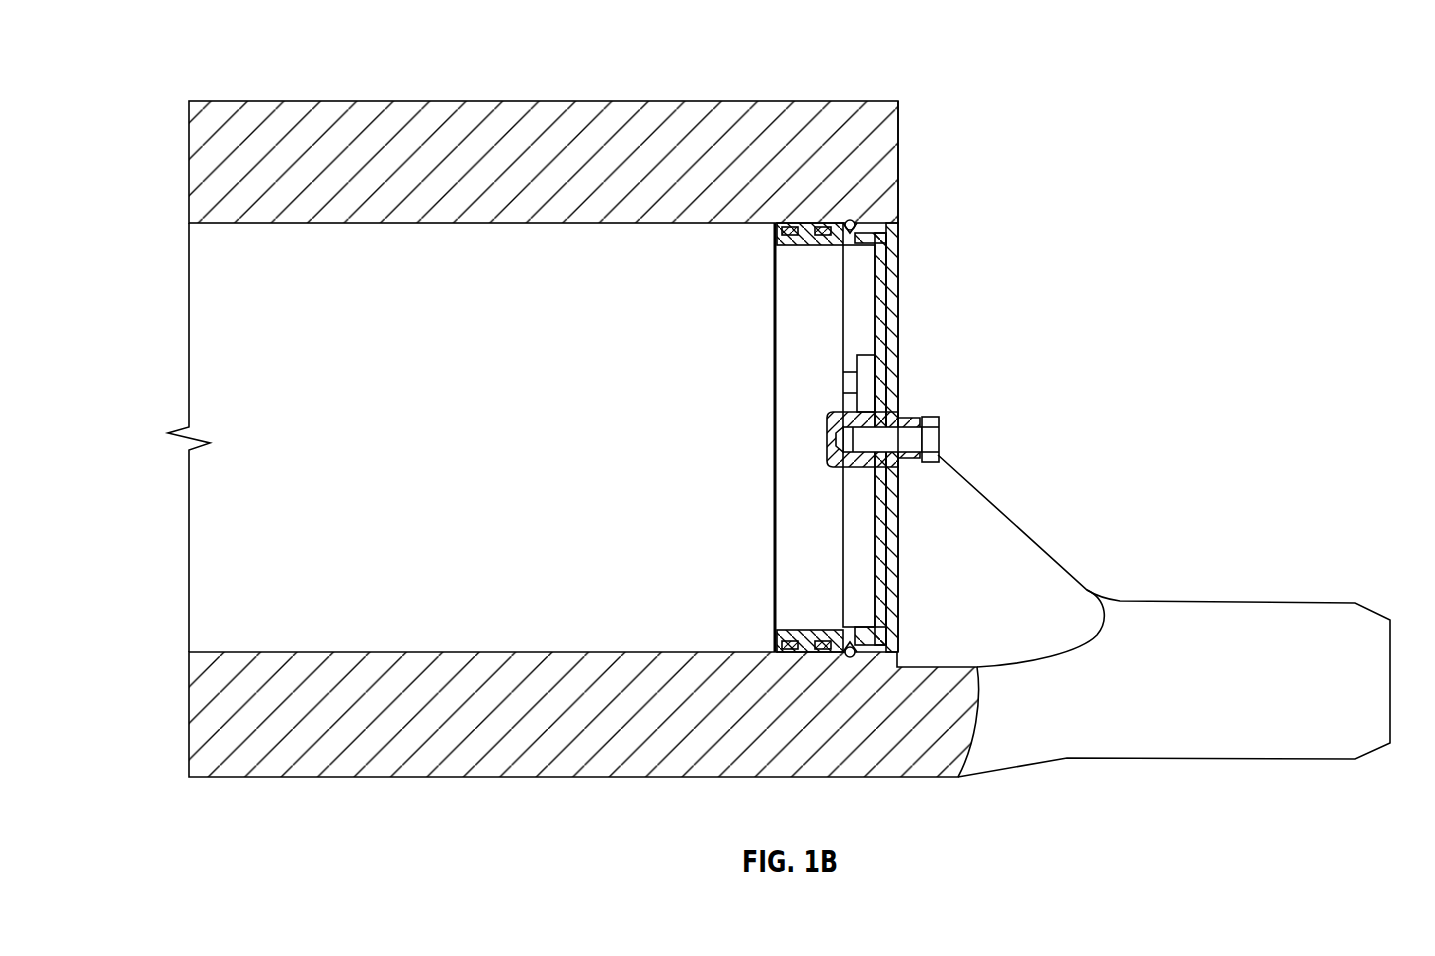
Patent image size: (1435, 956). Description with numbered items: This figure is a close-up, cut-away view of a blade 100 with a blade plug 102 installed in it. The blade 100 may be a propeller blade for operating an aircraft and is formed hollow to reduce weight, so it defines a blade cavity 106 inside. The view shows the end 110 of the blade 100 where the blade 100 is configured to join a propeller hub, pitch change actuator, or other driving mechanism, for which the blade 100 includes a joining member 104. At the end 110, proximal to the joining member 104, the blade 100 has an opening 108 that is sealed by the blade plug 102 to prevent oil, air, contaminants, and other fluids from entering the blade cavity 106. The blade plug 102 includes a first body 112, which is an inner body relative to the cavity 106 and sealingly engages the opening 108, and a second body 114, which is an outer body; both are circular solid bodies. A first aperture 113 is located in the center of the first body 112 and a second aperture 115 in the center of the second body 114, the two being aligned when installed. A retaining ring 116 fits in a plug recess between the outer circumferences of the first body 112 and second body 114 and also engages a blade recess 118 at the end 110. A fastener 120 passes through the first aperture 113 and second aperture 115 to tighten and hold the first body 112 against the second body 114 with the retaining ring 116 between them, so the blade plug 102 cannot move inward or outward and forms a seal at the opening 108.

The blade 100 is at (237, 128).
The blade plug 102 is at (986, 264).
The joining member 104 is at (1148, 524).
The blade cavity 106 is at (398, 470).
The opening 108 is at (710, 418).
The end 110 is at (885, 110).
The first body 112 is at (874, 552).
The first aperture 113 is at (836, 439).
The second body 114 is at (893, 372).
The second aperture 115 is at (908, 467).
The retaining ring 116 is at (850, 220).
The blade recess 118 is at (866, 194).
The fastener 120 is at (928, 440).